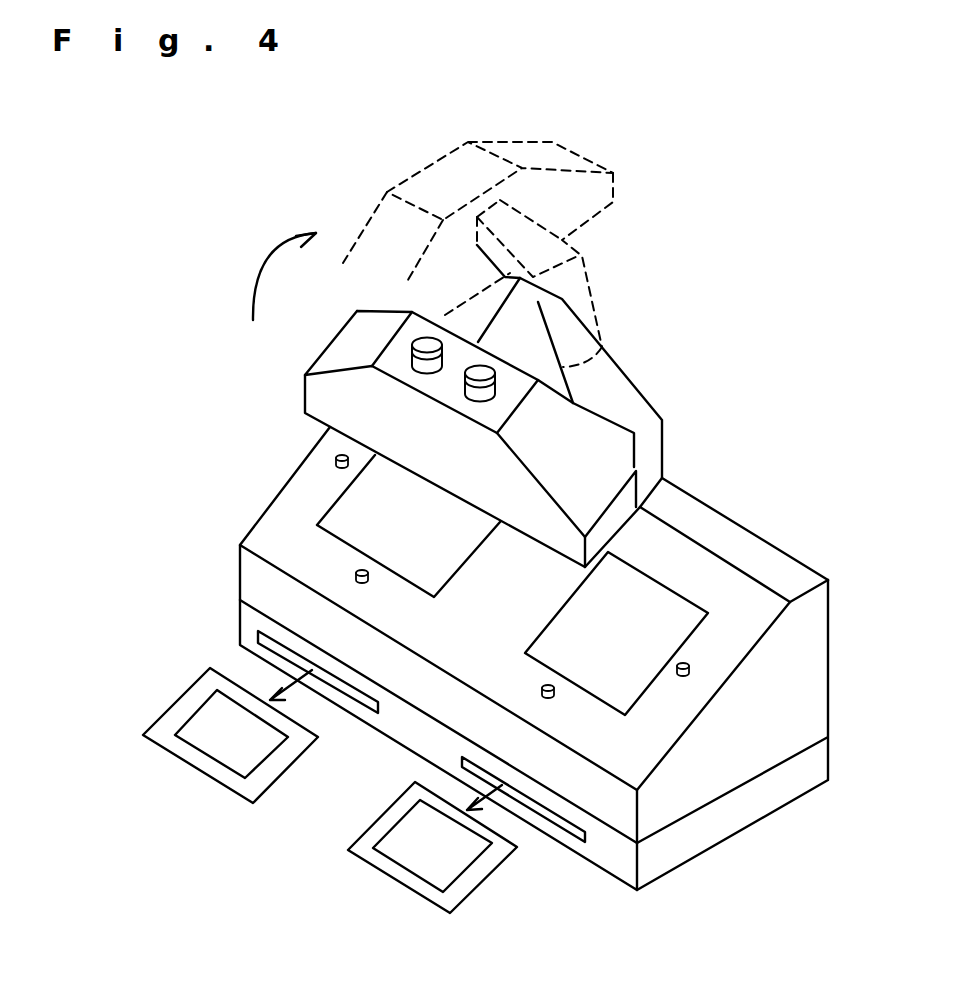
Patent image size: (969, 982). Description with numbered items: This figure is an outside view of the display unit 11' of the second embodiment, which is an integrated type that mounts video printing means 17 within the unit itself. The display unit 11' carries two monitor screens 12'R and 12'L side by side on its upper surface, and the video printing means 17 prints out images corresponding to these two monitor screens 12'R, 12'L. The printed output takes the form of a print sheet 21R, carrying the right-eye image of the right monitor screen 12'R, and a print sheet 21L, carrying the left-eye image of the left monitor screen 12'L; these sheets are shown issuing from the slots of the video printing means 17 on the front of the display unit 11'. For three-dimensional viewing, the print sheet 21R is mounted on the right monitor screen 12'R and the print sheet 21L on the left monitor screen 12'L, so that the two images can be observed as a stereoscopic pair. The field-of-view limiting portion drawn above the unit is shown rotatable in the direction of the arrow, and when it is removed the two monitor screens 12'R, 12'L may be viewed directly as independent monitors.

The display unit 11' is at (554, 516).
The monitor screen 12'L is at (340, 521).
The monitor screen 12'R is at (689, 589).
The video printing means 17 is at (408, 737).
The print sheet 21L is at (245, 787).
The print sheet 21R is at (402, 875).